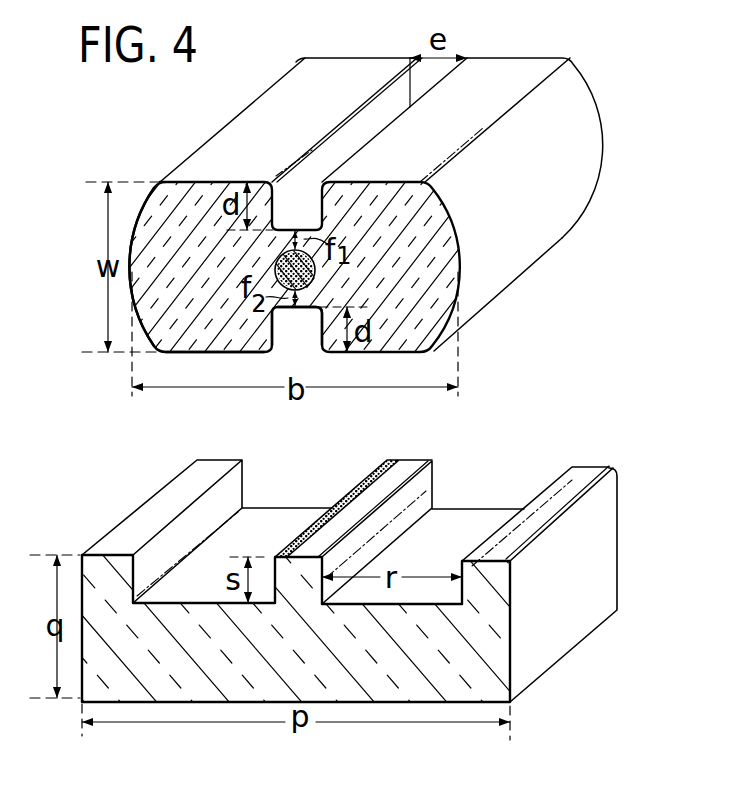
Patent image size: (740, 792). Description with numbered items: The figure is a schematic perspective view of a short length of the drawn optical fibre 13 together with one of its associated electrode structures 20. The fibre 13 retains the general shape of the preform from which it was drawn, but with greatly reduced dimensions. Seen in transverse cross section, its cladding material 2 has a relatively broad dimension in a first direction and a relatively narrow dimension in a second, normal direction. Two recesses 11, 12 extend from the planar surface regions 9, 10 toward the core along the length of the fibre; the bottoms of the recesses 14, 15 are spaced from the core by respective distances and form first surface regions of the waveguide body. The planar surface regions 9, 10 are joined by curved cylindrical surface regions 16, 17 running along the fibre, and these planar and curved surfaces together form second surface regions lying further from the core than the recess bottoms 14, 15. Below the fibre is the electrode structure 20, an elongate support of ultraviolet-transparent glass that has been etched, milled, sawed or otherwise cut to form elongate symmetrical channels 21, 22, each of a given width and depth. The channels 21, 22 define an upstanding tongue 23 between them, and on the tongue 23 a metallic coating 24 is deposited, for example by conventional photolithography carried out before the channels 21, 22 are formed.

The cladding material 2 is at (455, 247).
The planar surface region 9 is at (276, 108).
The planar surface region 10 is at (198, 353).
The recess 11 is at (392, 110).
The recess 12 is at (310, 353).
The optical fibre 13 is at (553, 258).
The bottom of recess 14 is at (286, 338).
The bottom of recess 15 is at (340, 203).
The curved cylindrical surface region 16 is at (587, 160).
The curved surface region 17 is at (142, 200).
The electrode structure 20 is at (607, 574).
The channel 21 is at (493, 522).
The channel 22 is at (280, 517).
The upstanding tongue 23 is at (423, 492).
The metallic coating 24 is at (398, 462).